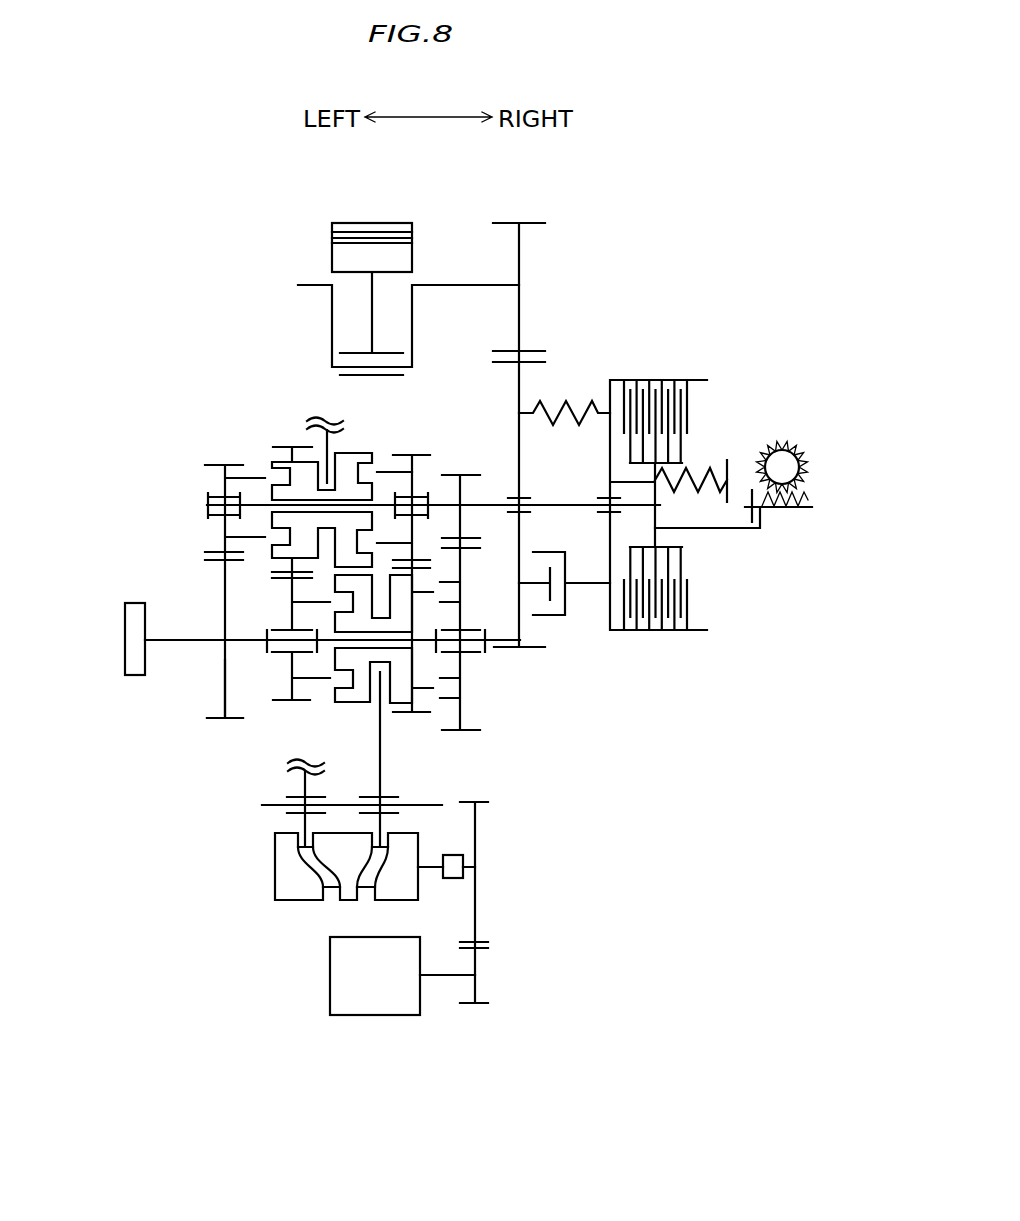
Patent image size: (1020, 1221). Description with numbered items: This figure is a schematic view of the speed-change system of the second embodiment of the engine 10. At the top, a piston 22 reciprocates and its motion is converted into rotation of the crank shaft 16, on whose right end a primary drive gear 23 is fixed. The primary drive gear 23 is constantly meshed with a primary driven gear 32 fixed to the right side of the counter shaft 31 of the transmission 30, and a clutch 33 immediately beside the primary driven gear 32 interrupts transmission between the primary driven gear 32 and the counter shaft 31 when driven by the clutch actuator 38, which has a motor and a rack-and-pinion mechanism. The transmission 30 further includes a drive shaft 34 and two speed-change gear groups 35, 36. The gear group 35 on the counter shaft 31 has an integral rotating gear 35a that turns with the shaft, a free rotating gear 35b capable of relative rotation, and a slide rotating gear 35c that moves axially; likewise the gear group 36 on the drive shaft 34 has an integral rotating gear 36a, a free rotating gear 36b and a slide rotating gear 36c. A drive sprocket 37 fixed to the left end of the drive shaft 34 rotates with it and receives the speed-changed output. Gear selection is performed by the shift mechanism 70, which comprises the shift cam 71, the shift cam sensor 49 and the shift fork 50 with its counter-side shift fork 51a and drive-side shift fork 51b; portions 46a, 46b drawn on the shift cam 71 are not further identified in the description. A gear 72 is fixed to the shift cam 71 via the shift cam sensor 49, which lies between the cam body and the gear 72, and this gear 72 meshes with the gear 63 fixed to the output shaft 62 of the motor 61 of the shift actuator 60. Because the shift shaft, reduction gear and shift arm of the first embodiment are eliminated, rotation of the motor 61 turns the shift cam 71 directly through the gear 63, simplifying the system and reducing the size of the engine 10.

The engine 10 is at (150, 285).
The crank shaft 16 is at (317, 285).
The piston 22 is at (328, 238).
The primary drive gear 23 is at (532, 221).
The transmission 30 is at (153, 563).
The counter shaft 31 is at (212, 518).
The primary driven gear 32 is at (545, 360).
The clutch 33 is at (718, 400).
The drive shaft 34 is at (167, 638).
The speed-change gear group 35 is at (168, 483).
The integral rotating gear 35a is at (462, 474).
The free rotating gear 35b is at (218, 462).
The slide rotating gear 35c is at (282, 445).
The speed-change gear group 36 is at (172, 685).
The integral rotating gear 36a is at (217, 720).
The free rotating gear 36b is at (302, 702).
The slide rotating gear 36c is at (428, 712).
The drive sprocket 37 is at (123, 636).
The clutch actuator 38 is at (807, 437).
The first engaging portion 46a is at (332, 900).
The second engaging portion 46b is at (362, 892).
The shift cam sensor 49 is at (454, 855).
The shift fork 50 is at (375, 602).
The counter-side shift fork 51a is at (313, 435).
The drive-side shift fork 51b is at (383, 762).
The shift actuator 60 is at (583, 935).
The motor 61 is at (336, 1016).
The output shaft 62 is at (437, 977).
The gear 63 is at (482, 1004).
The shift mechanism 70 is at (565, 755).
The shift cam 71 is at (290, 900).
The gear 72 is at (479, 913).